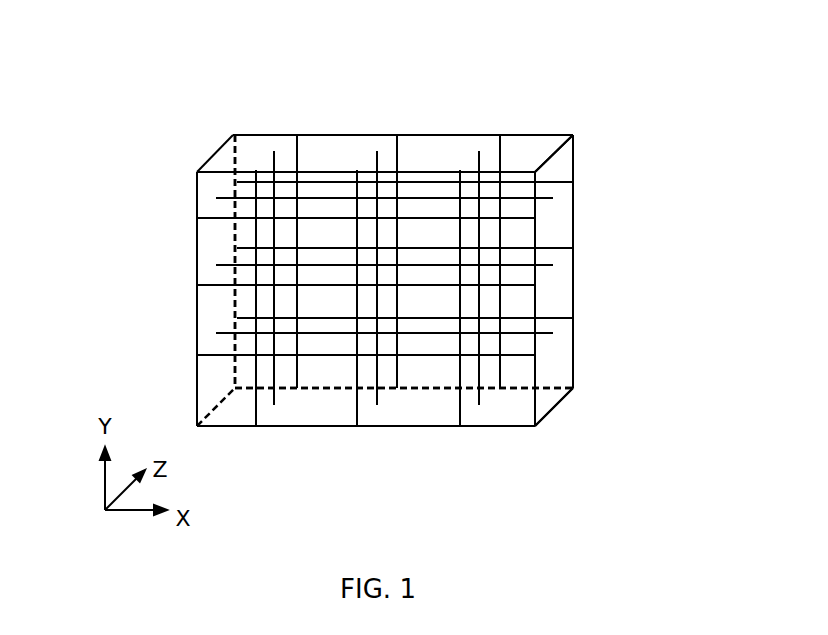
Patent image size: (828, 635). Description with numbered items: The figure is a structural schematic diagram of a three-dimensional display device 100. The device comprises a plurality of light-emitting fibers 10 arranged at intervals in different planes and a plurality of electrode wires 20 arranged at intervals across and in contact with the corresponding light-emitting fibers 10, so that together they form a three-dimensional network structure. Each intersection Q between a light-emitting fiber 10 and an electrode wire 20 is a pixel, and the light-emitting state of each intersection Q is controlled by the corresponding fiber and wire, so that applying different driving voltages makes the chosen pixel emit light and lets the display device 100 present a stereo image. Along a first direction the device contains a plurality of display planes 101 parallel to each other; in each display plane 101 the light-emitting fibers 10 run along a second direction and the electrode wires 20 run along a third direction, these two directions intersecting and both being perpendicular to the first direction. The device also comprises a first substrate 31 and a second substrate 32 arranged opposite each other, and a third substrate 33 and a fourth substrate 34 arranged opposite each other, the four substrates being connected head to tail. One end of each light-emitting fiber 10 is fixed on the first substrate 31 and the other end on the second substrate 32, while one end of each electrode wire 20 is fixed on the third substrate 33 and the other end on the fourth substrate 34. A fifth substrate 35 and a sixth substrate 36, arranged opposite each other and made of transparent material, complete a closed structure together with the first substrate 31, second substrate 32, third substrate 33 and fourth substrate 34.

The 3D display device 100 is at (169, 77).
The light-emitting fiber 10 is at (500, 157).
The electrode wire 20 is at (545, 250).
The first substrate 31 is at (353, 150).
The second substrate 32 is at (398, 428).
The third substrate 33 is at (573, 293).
The fourth substrate 34 is at (197, 253).
The fifth substrate 35 is at (505, 410).
The sixth substrate 36 is at (563, 362).
The display plane 101 is at (210, 317).
The intersection Q is at (385, 166).